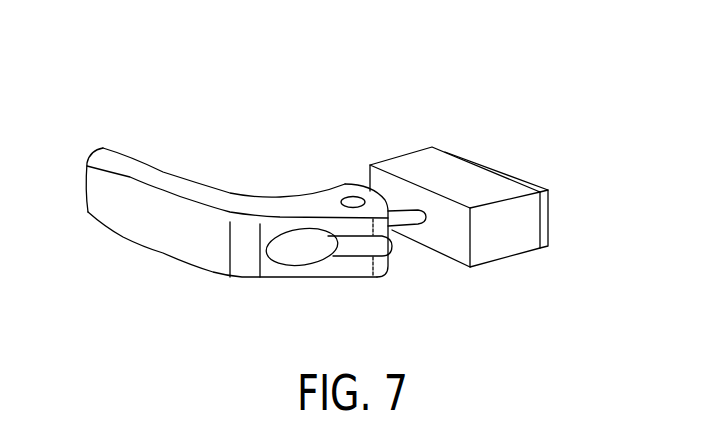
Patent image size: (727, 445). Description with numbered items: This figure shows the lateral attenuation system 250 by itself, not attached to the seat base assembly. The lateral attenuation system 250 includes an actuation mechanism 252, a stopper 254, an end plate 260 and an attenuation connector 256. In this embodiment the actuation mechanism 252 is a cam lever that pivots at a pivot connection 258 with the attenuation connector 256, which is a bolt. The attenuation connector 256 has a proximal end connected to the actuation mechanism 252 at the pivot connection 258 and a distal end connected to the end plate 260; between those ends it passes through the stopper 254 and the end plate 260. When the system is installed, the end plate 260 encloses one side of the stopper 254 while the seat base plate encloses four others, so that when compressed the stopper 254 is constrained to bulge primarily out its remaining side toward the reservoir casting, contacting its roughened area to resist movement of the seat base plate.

The lateral attenuation system 250 is at (240, 130).
The actuation mechanism 252 is at (203, 245).
The stopper 254 is at (422, 165).
The attenuation connector 256 is at (402, 228).
The pivot connection 258 is at (338, 244).
The end plate 260 is at (550, 218).